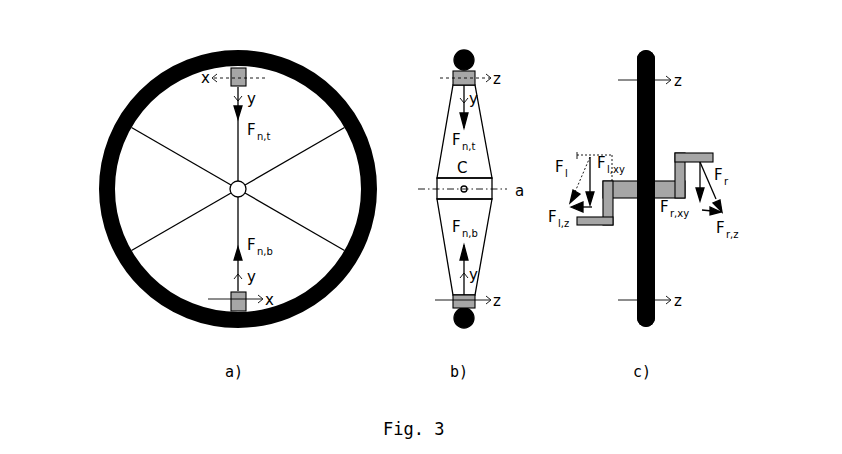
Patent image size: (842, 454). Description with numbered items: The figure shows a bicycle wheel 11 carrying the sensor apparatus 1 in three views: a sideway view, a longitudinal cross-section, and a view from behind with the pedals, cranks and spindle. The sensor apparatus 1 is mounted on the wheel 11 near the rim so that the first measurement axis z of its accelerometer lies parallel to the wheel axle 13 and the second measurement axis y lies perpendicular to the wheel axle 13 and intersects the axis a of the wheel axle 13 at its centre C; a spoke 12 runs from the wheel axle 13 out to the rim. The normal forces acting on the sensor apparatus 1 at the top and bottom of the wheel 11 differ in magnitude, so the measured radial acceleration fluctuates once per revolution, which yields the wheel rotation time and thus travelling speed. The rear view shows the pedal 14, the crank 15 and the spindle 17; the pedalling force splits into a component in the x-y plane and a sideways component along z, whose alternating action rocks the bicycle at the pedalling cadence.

The sensor apparatus 1 is at (228, 88).
The wheel 11 is at (143, 92).
The spoke 12 is at (147, 140).
The wheel axle 13 is at (229, 190).
The pedal 14 is at (708, 156).
The crank 15 is at (681, 152).
The spindle 17 is at (628, 200).